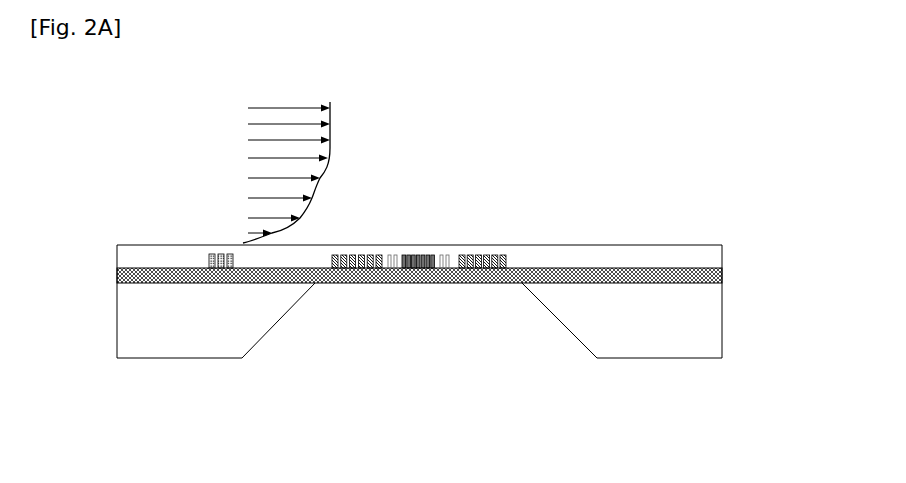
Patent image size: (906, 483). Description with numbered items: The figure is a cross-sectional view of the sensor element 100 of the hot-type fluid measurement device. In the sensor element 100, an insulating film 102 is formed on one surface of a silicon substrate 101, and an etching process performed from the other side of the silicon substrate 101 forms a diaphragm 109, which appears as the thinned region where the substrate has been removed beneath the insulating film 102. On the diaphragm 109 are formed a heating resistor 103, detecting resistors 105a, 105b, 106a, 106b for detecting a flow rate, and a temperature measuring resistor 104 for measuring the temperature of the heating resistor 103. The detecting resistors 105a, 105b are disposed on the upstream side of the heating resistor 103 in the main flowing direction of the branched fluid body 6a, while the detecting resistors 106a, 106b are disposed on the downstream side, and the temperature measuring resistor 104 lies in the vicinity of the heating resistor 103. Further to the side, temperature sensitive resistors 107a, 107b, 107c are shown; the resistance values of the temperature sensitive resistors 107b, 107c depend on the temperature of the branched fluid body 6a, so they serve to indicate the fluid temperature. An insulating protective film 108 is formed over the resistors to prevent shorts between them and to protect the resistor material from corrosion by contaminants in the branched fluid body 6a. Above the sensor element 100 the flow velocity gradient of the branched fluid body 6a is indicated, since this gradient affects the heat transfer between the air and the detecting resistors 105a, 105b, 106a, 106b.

The sensor element 100 is at (412, 316).
The branched fluid body 6a is at (331, 118).
The silicon substrate 101 is at (638, 322).
The insulating film 102 is at (640, 276).
The heating resistor 103 is at (405, 286).
The temperature measuring resistor 104 is at (391, 245).
The detecting resistor 105a is at (385, 286).
The detecting resistor 105b is at (349, 335).
The detecting resistor 106a is at (453, 286).
The detecting resistor 106b is at (493, 335).
The ambient temperature sensing element 107a is at (238, 286).
The temperature sensitive resistor 107b is at (192, 343).
The temperature sensitive resistor 107c is at (197, 358).
The insulating protective film 108 is at (638, 258).
The diaphragm 109 is at (528, 337).